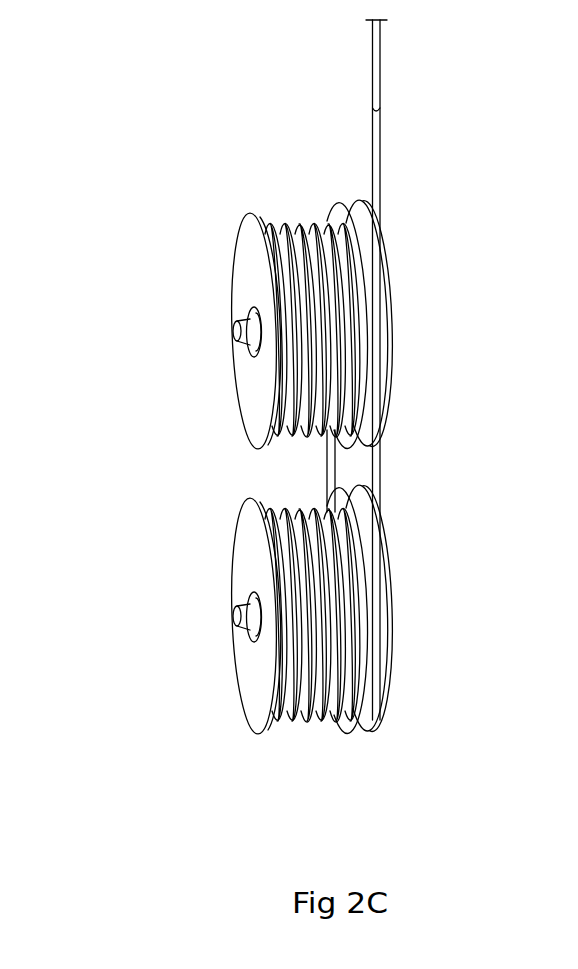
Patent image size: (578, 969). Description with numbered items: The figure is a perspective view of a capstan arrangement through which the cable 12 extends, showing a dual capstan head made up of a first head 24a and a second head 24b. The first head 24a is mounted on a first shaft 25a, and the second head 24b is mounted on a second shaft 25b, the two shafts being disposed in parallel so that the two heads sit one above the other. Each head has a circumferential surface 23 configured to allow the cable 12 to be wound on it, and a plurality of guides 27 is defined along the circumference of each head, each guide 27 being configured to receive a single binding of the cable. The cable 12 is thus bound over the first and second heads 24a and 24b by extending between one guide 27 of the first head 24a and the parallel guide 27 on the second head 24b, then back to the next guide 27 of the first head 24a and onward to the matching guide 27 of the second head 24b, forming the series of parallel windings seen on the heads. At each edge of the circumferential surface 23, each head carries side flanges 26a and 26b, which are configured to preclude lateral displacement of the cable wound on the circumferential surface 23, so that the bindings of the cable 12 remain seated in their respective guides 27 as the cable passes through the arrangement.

The cable 12 is at (373, 202).
The circumferential surface 23 is at (335, 212).
The first head 24a is at (250, 272).
The second head 24b is at (248, 567).
The first shaft 25a is at (238, 338).
The second shaft 25b is at (230, 618).
The side flange 26a is at (248, 215).
The side flange 26b is at (250, 500).
The guide 27 is at (311, 223).